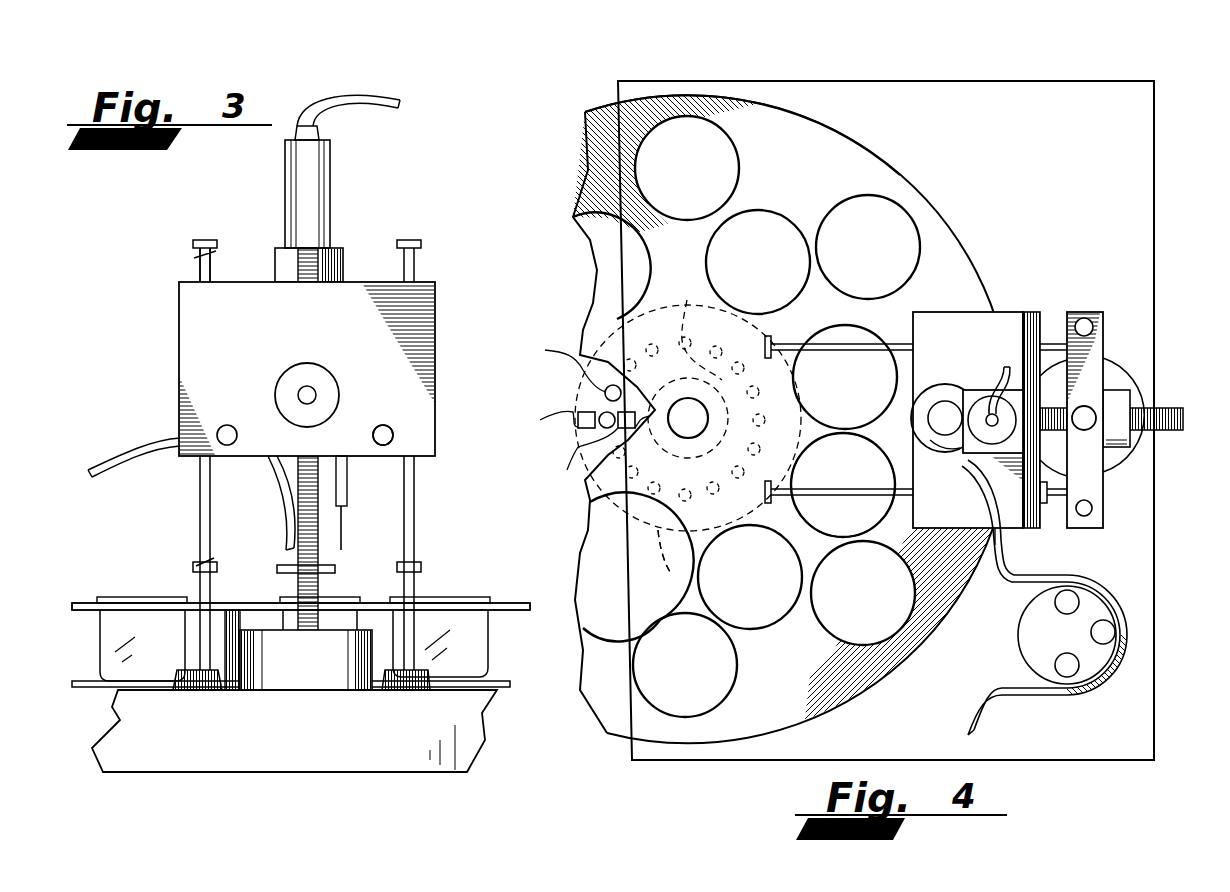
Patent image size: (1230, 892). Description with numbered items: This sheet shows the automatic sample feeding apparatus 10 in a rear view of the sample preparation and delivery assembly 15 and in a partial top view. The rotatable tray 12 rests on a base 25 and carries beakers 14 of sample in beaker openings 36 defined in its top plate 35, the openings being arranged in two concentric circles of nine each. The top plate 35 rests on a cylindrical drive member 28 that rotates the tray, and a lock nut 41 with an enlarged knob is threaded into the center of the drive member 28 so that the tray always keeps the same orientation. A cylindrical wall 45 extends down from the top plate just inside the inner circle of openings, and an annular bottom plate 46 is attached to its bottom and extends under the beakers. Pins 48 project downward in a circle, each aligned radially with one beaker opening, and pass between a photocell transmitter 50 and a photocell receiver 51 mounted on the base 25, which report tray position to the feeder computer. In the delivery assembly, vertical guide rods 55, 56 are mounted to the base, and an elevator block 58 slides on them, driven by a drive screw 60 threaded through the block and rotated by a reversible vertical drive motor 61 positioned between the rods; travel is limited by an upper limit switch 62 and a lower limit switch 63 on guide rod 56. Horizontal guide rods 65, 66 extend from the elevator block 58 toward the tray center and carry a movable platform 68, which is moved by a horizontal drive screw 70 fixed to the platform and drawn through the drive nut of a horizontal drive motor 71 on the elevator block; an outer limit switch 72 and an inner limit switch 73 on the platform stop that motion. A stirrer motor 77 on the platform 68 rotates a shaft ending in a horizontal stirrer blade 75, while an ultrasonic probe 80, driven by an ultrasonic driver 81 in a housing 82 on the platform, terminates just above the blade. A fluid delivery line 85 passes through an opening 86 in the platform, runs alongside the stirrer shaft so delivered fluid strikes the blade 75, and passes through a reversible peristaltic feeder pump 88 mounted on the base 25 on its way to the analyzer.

In FIG. 3, the automatic sample feeding apparatus 10 is at (95, 252).
In FIG. 4, the automatic sample feeding apparatus 10 is at (1168, 308).
In FIG. 3, the rotatable tray 12 is at (522, 612).
In FIG. 4, the rotatable tray 12 is at (887, 155).
In FIG. 3, the beakers 14 is at (450, 600).
In FIG. 3, the sample preparation and delivery assembly 15 is at (372, 158).
In FIG. 4, the sample preparation and delivery assembly 15 is at (1057, 275).
In FIG. 3, the base 25 is at (483, 733).
In FIG. 4, the cylindrical drive member 28 is at (648, 350).
In FIG. 3, the top plate 35 is at (92, 610).
In FIG. 4, the top plate 35 is at (833, 160).
In FIG. 3, the beaker openings 36 is at (294, 645).
In FIG. 4, the beaker openings 36 is at (732, 186).
In FIG. 4, the lock nut 41 is at (687, 428).
In FIG. 3, the cylindrical wall 45 is at (240, 616).
In FIG. 4, the cylindrical wall 45 is at (676, 565).
In FIG. 3, the annular bottom plate 46 is at (100, 682).
In FIG. 4, the pins 48 is at (698, 305).
In FIG. 4, the photocell transmitter 50 is at (589, 413).
In FIG. 4, the photocell receiver 51 is at (580, 431).
In FIG. 3, the vertical guide rod 55 is at (418, 258).
In FIG. 4, the vertical guide rod 55 is at (1083, 320).
In FIG. 3, the vertical guide rod 56 is at (200, 272).
In FIG. 4, the vertical guide rod 56 is at (1091, 515).
In FIG. 3, the elevator block 58 is at (437, 352).
In FIG. 3, the drive screw 60 is at (300, 270).
In FIG. 4, the drive screw 60 is at (1084, 405).
In FIG. 3, the reversible vertical drive motor 61 is at (287, 678).
In FIG. 4, the reversible vertical drive motor 61 is at (1127, 457).
In FIG. 3, the upper limit switch 62 is at (195, 255).
In FIG. 3, the lower limit switch 63 is at (200, 560).
In FIG. 3, the horizontal guide rod 65 is at (222, 425).
In FIG. 4, the horizontal guide rod 65 is at (840, 485).
In FIG. 3, the horizontal guide rod 66 is at (388, 426).
In FIG. 4, the horizontal guide rod 66 is at (885, 350).
In FIG. 4, the movable platform 68 is at (960, 322).
In FIG. 3, the horizontal drive screw 70 is at (316, 402).
In FIG. 4, the horizontal drive screw 70 is at (1168, 408).
In FIG. 3, the horizontal drive motor 71 is at (328, 374).
In FIG. 4, the horizontal drive motor 71 is at (1112, 400).
In FIG. 4, the outer limit switch 72 is at (1055, 515).
In FIG. 4, the inner limit switch 73 is at (912, 490).
In FIG. 3, the stirrer blade 75 is at (333, 572).
In FIG. 4, the stirrer motor 77 is at (933, 390).
In FIG. 3, the ultrasonic probe 80 is at (348, 540).
In FIG. 3, the ultrasonic driver 81 is at (312, 160).
In FIG. 4, the ultrasonic driver 81 is at (985, 412).
In FIG. 3, the housing 82 is at (345, 263).
In FIG. 3, the fluid delivery line 85 is at (276, 492).
In FIG. 4, the fluid delivery line 85 is at (1012, 558).
In FIG. 4, the opening 86 is at (962, 472).
In FIG. 4, the reversible peristaltic feeder pump 88 is at (1018, 623).